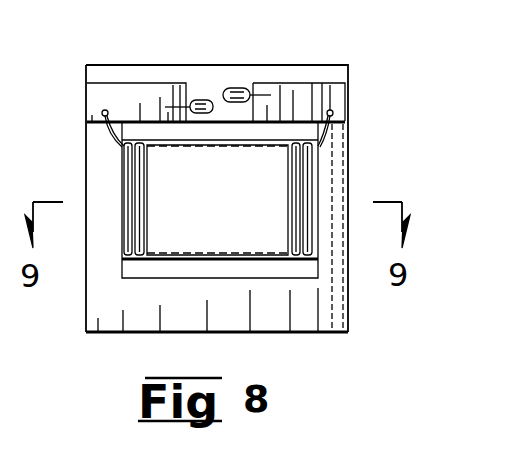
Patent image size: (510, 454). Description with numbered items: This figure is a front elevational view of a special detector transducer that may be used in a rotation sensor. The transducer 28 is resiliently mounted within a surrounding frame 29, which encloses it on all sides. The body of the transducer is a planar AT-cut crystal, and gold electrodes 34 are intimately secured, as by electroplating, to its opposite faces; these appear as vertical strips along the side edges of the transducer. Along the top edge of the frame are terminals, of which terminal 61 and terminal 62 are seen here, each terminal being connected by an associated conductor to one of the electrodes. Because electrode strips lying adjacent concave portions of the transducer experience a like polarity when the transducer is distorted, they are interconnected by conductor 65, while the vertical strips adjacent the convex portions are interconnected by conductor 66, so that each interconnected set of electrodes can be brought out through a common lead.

The transducer 28 is at (231, 182).
The frame 29 is at (350, 310).
The gold electrodes 34 is at (152, 211).
The terminal 61 is at (93, 103).
The terminal 62 is at (326, 90).
The conductor 65 is at (181, 108).
The conductor 66 is at (257, 97).